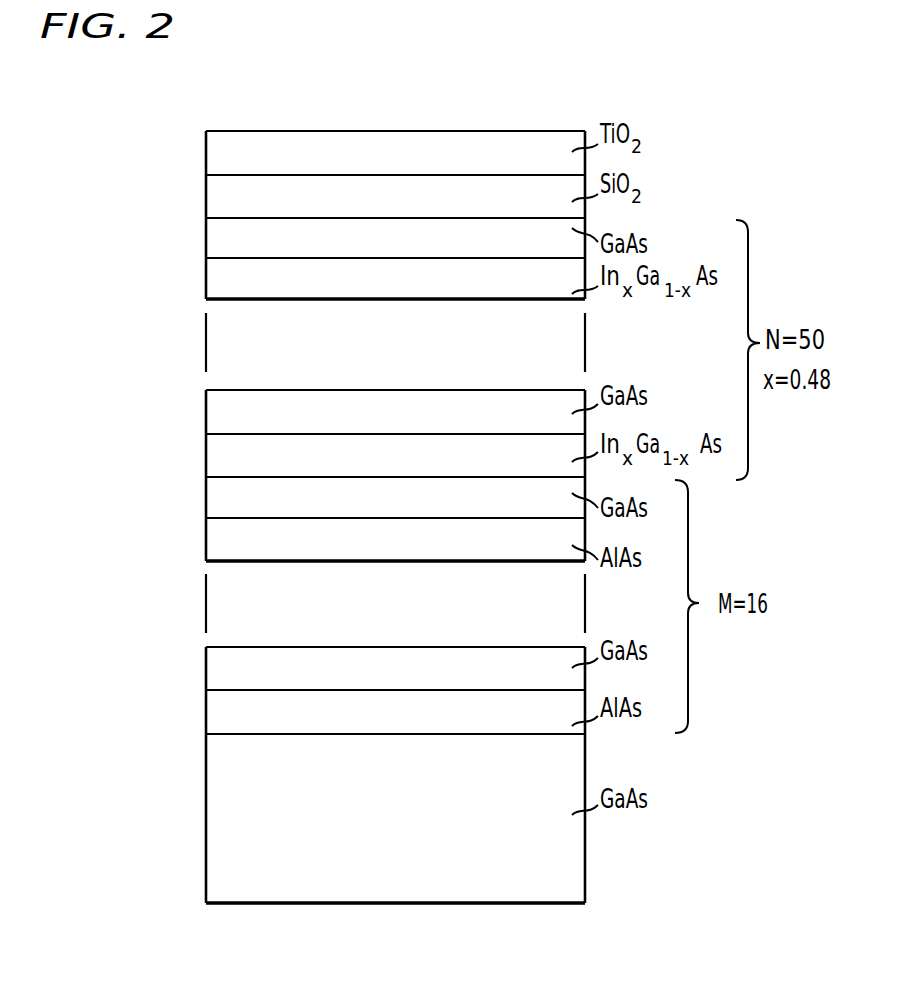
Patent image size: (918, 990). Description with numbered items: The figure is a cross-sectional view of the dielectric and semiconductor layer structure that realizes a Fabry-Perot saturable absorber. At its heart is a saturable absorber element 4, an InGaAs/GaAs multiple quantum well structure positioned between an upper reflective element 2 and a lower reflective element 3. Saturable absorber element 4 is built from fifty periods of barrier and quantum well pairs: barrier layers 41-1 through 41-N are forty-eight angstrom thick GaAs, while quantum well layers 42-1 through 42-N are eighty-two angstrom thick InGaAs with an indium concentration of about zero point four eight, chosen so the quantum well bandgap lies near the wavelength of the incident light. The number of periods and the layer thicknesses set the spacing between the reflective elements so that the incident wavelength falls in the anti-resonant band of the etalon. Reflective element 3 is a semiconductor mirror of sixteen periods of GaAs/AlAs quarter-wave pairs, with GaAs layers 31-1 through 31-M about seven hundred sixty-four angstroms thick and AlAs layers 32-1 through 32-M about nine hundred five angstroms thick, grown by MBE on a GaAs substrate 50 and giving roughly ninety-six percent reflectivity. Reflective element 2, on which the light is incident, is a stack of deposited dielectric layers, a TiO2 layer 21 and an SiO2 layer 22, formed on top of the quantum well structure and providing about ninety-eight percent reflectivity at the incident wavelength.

The reflective element 2 is at (120, 128).
The dielectric layer 21 is at (210, 146).
The dielectric layer 22 is at (210, 190).
The saturable absorber element 4 is at (120, 480).
The barrier layer 41-1 is at (211, 250).
The quantum well layer 42-1 is at (211, 290).
The barrier layer 41-N is at (222, 412).
The quantum well layer 42-N is at (222, 463).
The reflective element 3 is at (120, 733).
The GaAs layer 31-1 is at (222, 510).
The AlAs layer 32-1 is at (222, 555).
The GaAs layer 31-M is at (222, 667).
The AlAs layer 32-M is at (222, 718).
The GaAs substrate 50 is at (222, 817).